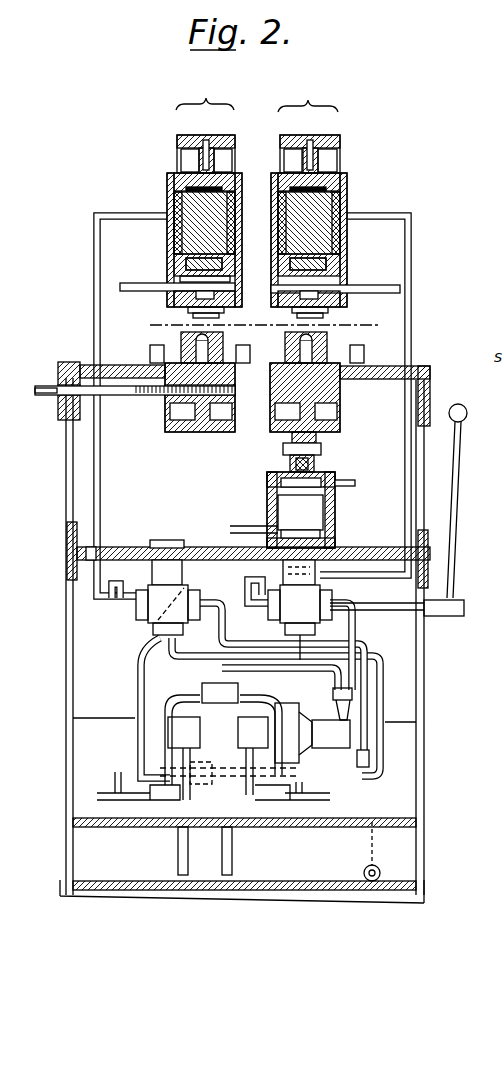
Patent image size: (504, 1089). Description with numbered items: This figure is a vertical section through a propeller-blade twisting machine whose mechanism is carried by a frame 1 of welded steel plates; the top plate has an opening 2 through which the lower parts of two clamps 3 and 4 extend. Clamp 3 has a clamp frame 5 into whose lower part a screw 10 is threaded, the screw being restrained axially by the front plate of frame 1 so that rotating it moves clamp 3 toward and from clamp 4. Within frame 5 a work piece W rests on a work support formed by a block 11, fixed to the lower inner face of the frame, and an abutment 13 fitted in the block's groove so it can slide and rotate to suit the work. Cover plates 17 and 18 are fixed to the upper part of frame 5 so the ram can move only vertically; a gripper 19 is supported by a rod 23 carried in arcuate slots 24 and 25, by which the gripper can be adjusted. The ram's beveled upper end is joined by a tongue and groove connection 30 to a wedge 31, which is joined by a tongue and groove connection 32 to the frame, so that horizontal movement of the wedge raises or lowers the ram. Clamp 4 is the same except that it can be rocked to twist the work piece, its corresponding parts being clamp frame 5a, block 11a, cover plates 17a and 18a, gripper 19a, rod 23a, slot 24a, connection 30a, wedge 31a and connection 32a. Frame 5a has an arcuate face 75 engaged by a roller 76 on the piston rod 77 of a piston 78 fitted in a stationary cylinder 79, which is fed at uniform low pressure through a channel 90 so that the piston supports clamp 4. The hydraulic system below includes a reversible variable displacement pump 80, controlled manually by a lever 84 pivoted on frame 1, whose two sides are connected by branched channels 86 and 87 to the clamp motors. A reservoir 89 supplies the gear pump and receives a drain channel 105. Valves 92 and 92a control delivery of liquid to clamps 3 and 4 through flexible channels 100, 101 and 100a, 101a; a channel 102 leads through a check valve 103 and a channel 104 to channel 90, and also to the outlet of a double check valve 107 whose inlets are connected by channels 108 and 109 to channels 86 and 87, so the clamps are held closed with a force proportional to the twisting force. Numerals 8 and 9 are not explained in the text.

The frame 1 is at (68, 552).
The opening 2 is at (345, 380).
The clamp 3 is at (205, 95).
The clamp 4 is at (308, 97).
The clamp frame 5 is at (198, 432).
The clamp frame 5a is at (280, 432).
The bracket 8 is at (242, 375).
The housing 9 is at (498, 717).
The screw 10 is at (140, 396).
The block 11 is at (181, 350).
The block 11a is at (327, 350).
The abutment 13 is at (190, 323).
The cover plate 17 is at (242, 220).
The cover plate 17a is at (271, 178).
The cover plate 18 is at (168, 180).
The cover plate 18a is at (346, 196).
The gripper 19 is at (174, 300).
The gripper 19a is at (346, 300).
The rod 23 is at (140, 283).
The rod 23a is at (372, 286).
The arcuate slot 24 is at (186, 266).
The arcuate slot 24a is at (345, 287).
The arcuate slot 25 is at (228, 284).
The tongue and groove connection 30 is at (190, 243).
The tongue and groove connection 30a is at (320, 265).
The wedge 31 is at (235, 236).
The wedge 31a is at (338, 220).
The tongue and groove connection 32 is at (186, 189).
The tongue and groove connection 32a is at (341, 185).
The arcuate face 75 is at (328, 434).
The roller 76 is at (322, 462).
The piston rod 77 is at (292, 466).
The piston 78 is at (300, 516).
The cylinder 79 is at (267, 497).
The pump 80 is at (240, 812).
The lever 84 is at (455, 470).
The channel 86 is at (138, 802).
The channel 87 is at (318, 802).
The reservoir 89 is at (282, 888).
The channel 90 is at (138, 668).
The valve 92 is at (168, 587).
The valve 92a is at (300, 610).
The channel 100 is at (124, 606).
The channel 100a is at (262, 605).
The channel 101 is at (95, 288).
The channel 101a is at (412, 292).
The channel 102 is at (314, 672).
The check valve 103 is at (370, 757).
The channel 104 is at (330, 783).
The drain channel 105 is at (192, 658).
The double check valve 107 is at (220, 693).
The channel 108 is at (183, 706).
The channel 109 is at (265, 706).
The work piece W is at (273, 325).